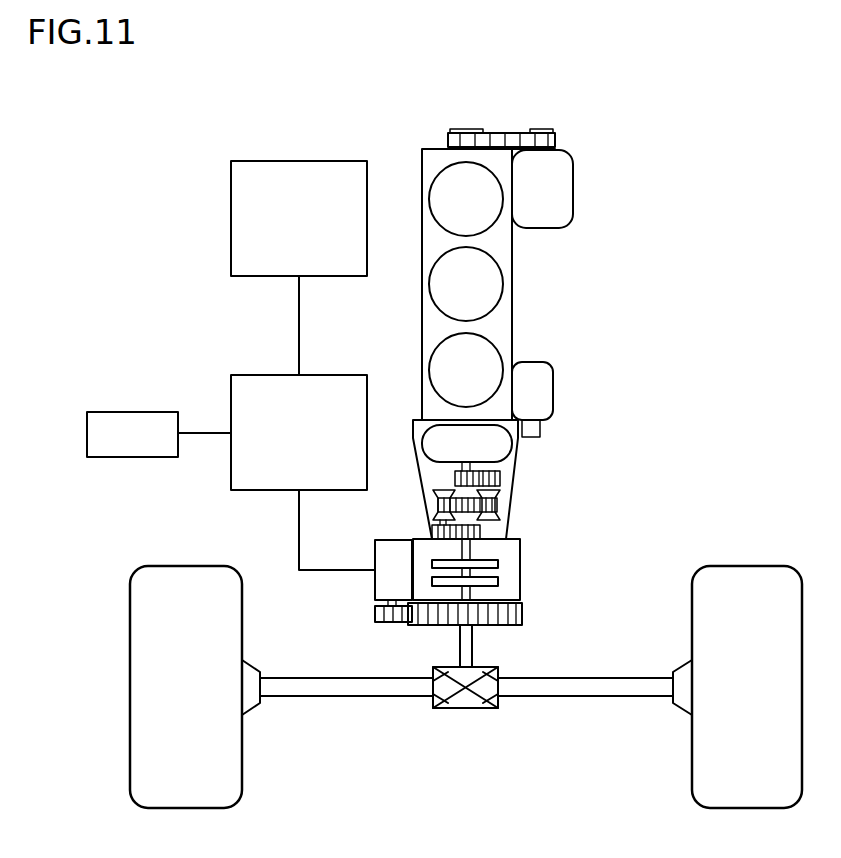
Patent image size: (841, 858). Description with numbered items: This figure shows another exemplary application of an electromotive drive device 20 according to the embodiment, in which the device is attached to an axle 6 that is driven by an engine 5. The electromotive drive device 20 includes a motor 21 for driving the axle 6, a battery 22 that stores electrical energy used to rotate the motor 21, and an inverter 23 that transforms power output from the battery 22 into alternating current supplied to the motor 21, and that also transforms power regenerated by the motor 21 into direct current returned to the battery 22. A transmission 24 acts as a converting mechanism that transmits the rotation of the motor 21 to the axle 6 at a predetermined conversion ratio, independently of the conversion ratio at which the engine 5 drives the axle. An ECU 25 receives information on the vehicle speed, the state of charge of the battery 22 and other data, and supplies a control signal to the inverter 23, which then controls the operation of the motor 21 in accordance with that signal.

The electromotive drive device 20 is at (140, 151).
The battery 22 is at (231, 208).
The inverter 23 is at (231, 480).
The ECU 25 is at (106, 459).
The engine 5 is at (512, 285).
The motor 21 is at (375, 590).
The transmission 24 is at (388, 624).
The axle 6 is at (339, 692).